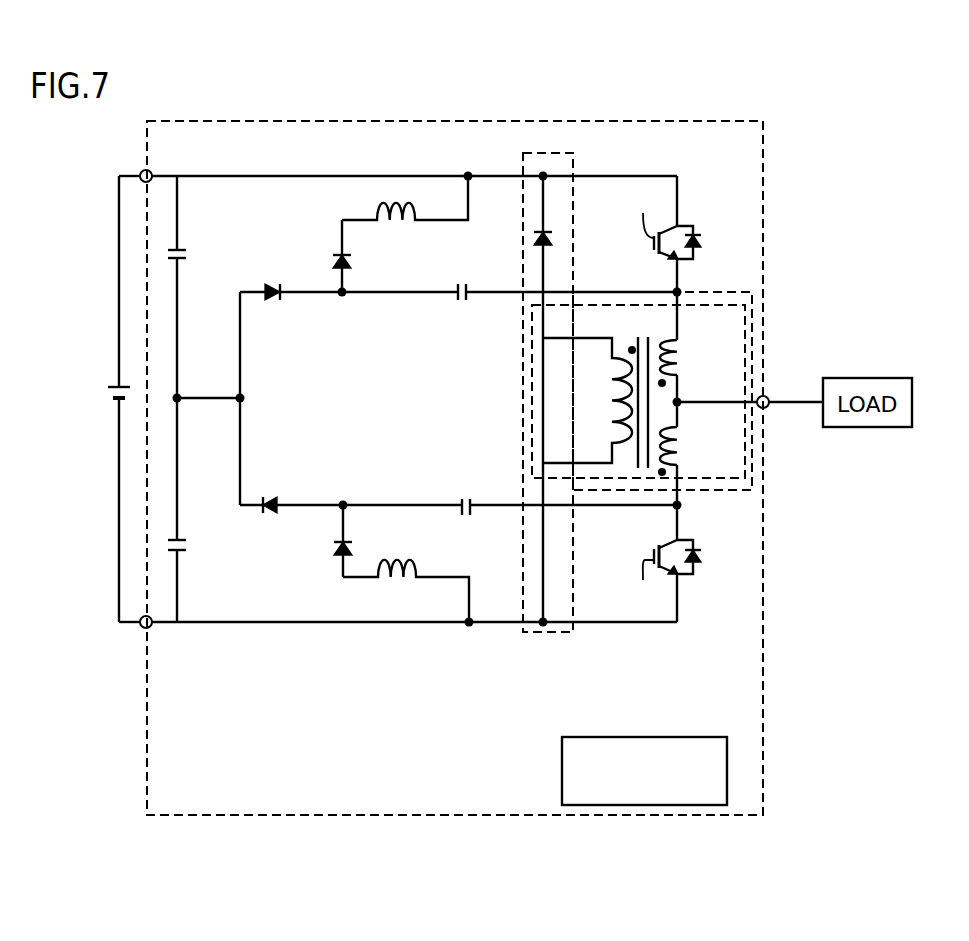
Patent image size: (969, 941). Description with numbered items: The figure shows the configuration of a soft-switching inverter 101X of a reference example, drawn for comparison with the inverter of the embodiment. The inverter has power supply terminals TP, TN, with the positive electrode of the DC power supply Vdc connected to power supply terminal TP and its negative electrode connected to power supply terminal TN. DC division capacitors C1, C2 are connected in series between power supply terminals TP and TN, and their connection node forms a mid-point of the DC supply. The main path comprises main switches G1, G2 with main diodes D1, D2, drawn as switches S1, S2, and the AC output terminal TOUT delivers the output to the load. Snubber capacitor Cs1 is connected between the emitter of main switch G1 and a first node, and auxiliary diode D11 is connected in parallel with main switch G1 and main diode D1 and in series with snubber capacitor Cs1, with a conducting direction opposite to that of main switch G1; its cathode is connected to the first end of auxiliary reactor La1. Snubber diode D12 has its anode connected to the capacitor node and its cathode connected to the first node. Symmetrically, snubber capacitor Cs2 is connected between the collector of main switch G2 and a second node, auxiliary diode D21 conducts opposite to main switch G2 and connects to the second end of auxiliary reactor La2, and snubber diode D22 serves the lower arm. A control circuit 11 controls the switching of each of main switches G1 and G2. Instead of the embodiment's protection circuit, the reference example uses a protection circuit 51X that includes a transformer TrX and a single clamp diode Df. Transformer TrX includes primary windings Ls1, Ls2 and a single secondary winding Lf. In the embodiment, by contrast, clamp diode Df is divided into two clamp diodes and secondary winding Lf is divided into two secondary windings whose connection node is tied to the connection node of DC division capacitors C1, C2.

The soft-switching inverter 101X is at (763, 162).
The power supply terminal TP is at (152, 175).
The power supply terminal TN is at (150, 628).
The DC power supply Vdc is at (112, 386).
The DC division capacitor C1 is at (188, 255).
The DC division capacitor C2 is at (188, 548).
The auxiliary diode D11 is at (332, 264).
The snubber diode D12 is at (262, 297).
The auxiliary diode D21 is at (342, 558).
The snubber diode D22 is at (280, 507).
The auxiliary reactor La1 is at (392, 218).
The auxiliary reactor La2 is at (392, 576).
The snubber capacitor Cs1 is at (468, 300).
The snubber capacitor Cs2 is at (472, 514).
The clamp diode Df is at (553, 243).
The protection circuit 51X is at (752, 305).
The transformer TrX is at (745, 462).
The secondary winding Lf is at (612, 395).
The primary winding Ls1 is at (680, 350).
The primary winding Ls2 is at (680, 440).
The AC output terminal TOUT is at (768, 397).
The switch S1 is at (714, 241).
The switch S2 is at (714, 560).
The main diode D1 is at (699, 236).
The main diode D2 is at (699, 552).
The main switch G1 is at (647, 212).
The main switch G2 is at (645, 585).
The control circuit 11 is at (712, 735).